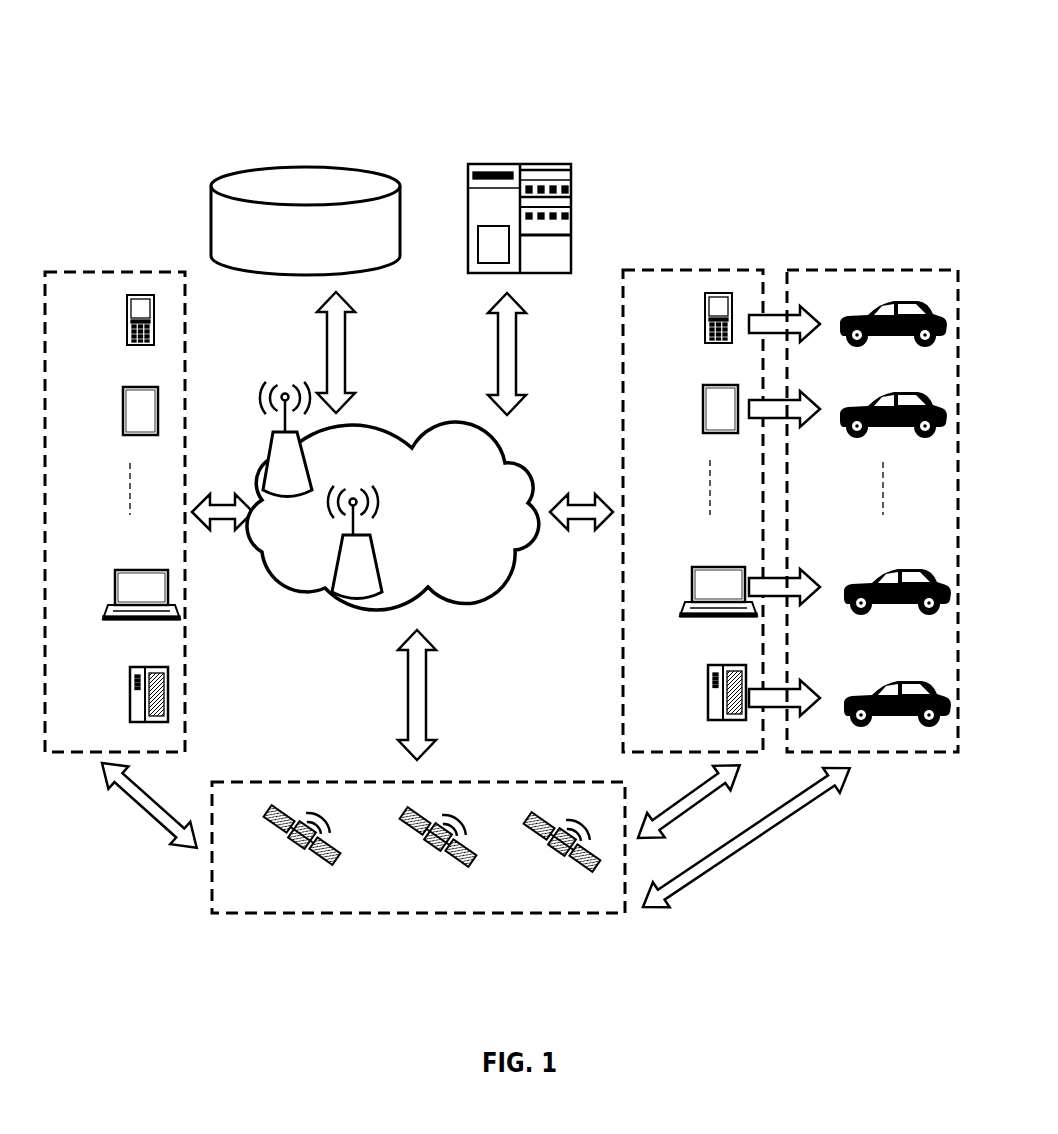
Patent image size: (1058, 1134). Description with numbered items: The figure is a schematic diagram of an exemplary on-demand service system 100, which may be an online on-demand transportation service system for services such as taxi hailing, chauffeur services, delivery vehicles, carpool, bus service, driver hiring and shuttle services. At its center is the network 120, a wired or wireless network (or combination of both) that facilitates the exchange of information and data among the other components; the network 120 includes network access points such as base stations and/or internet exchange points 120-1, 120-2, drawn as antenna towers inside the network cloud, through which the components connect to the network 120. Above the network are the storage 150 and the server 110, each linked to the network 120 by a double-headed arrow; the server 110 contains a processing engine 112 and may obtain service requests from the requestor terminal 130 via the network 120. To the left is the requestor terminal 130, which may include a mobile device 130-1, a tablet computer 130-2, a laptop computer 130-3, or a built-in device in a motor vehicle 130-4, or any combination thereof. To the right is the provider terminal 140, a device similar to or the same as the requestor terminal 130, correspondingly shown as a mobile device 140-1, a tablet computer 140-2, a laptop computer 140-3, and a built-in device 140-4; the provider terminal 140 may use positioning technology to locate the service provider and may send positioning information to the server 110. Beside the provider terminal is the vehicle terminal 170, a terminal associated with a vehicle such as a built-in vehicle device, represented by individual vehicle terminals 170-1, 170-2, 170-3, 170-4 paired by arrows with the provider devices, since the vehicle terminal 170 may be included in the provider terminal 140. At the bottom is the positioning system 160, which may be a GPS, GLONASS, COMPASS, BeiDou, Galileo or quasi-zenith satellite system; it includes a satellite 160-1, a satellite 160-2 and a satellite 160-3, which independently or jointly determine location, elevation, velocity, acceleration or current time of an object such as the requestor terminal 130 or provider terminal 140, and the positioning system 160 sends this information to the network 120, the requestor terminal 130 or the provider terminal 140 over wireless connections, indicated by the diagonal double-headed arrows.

The on-demand service system 100 is at (865, 30).
The server 110 is at (529, 193).
The processing engine 112 is at (478, 240).
The network 120 is at (391, 496).
The network access point 120-1 is at (273, 448).
The network access point 120-2 is at (333, 567).
The requestor terminal 130 is at (115, 475).
The mobile device 130-1 is at (127, 323).
The tablet computer 130-2 is at (123, 402).
The laptop computer 130-3 is at (115, 582).
The built-in device in a motor vehicle 130-4 is at (130, 700).
The provider terminal 140 is at (693, 472).
The mobile device 140-1 is at (705, 323).
The tablet computer 140-2 is at (703, 400).
The laptop computer 140-3 is at (690, 578).
The built-in device in a motor vehicle 140-4 is at (708, 697).
The storage 150 is at (278, 167).
The positioning system 160 is at (418, 813).
The satellite 160-1 is at (298, 857).
The satellite 160-2 is at (423, 858).
The satellite 160-3 is at (553, 860).
The vehicle terminal 170 is at (872, 475).
The vehicle terminal 170-1 is at (845, 318).
The vehicle terminal 170-2 is at (845, 408).
The vehicle terminal 170-3 is at (850, 582).
The vehicle terminal 170-4 is at (850, 693).